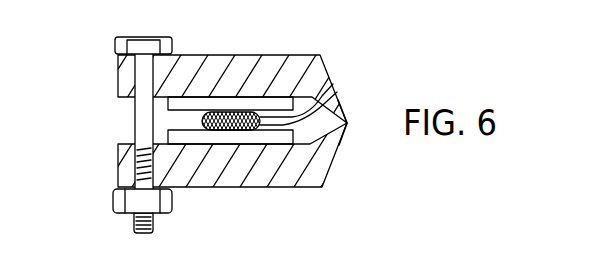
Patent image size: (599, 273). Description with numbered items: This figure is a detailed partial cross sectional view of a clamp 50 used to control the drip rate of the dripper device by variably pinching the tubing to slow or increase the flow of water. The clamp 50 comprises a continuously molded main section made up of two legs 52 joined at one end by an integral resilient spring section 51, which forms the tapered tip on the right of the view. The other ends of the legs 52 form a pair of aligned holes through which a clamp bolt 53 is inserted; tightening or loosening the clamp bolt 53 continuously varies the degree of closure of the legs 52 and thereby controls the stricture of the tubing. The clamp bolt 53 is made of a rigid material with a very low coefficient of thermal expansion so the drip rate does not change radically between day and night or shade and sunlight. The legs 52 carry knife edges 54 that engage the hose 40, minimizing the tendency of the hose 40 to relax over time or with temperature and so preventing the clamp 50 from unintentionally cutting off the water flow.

The hose 40 is at (337, 97).
The clamp 50 is at (237, 123).
The integral resilient spring section 51 is at (348, 135).
The legs 52 is at (222, 59).
The clamp bolt 53 is at (134, 118).
The knife edges 54 is at (270, 104).